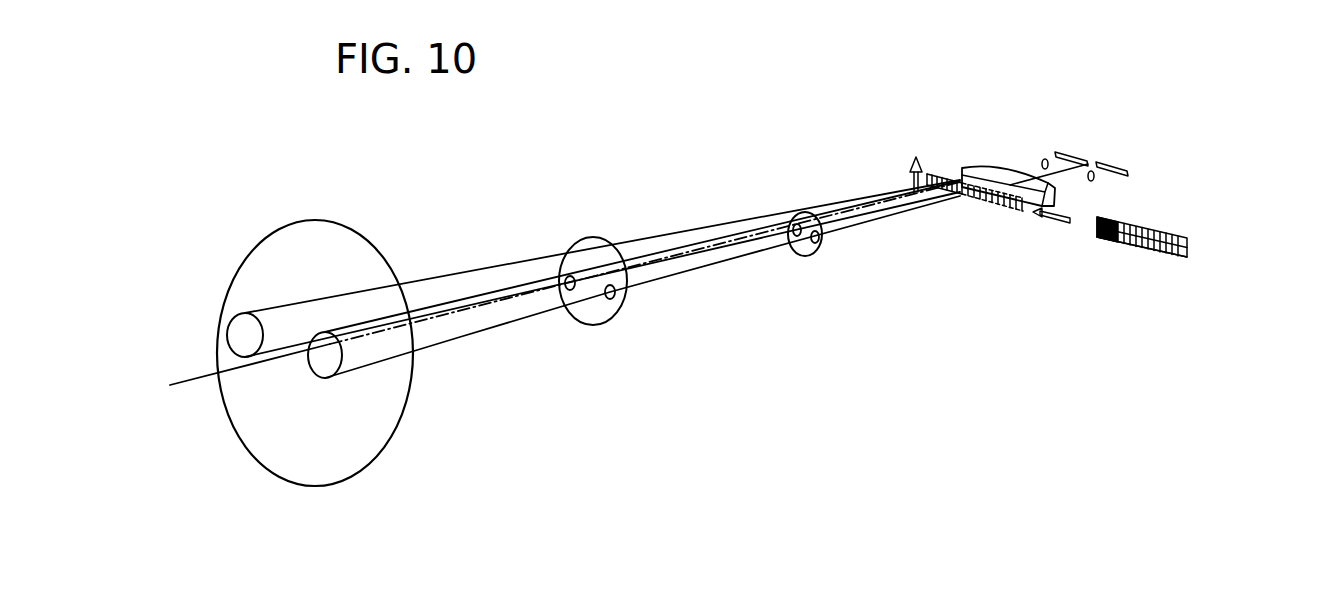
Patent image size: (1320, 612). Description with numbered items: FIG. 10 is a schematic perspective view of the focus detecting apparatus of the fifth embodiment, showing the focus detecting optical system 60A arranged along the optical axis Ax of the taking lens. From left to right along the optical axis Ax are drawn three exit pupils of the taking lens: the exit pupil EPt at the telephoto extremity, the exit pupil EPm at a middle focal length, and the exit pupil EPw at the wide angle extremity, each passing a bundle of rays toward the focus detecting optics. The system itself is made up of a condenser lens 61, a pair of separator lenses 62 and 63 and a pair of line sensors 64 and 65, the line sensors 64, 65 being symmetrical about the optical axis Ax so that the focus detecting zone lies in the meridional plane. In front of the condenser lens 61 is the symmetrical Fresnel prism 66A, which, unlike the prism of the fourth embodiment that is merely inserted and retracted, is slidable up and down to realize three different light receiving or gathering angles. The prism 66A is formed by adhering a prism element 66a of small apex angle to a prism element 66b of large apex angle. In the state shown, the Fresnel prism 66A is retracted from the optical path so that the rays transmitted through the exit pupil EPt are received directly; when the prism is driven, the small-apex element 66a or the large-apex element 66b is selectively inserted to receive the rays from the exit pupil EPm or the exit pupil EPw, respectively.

The focus detecting optical system 60A is at (1049, 195).
The condenser lens 61 is at (985, 166).
The separator lens 62 is at (1045, 158).
The separator lens 63 is at (1096, 178).
The line sensor 64 is at (1073, 152).
The line sensor 65 is at (1122, 163).
The symmetrical Fresnel prism 66A is at (1007, 207).
The prism element of small apex angle 66a is at (1187, 239).
The prism element of large apex angle 66b is at (1188, 255).
The exit pupil at the telephoto extremity EPt is at (370, 463).
The exit pupil at a middle focal length EPm is at (605, 324).
The exit pupil at the wide angle extremity EPw is at (810, 256).
The optical axis Ax is at (495, 306).